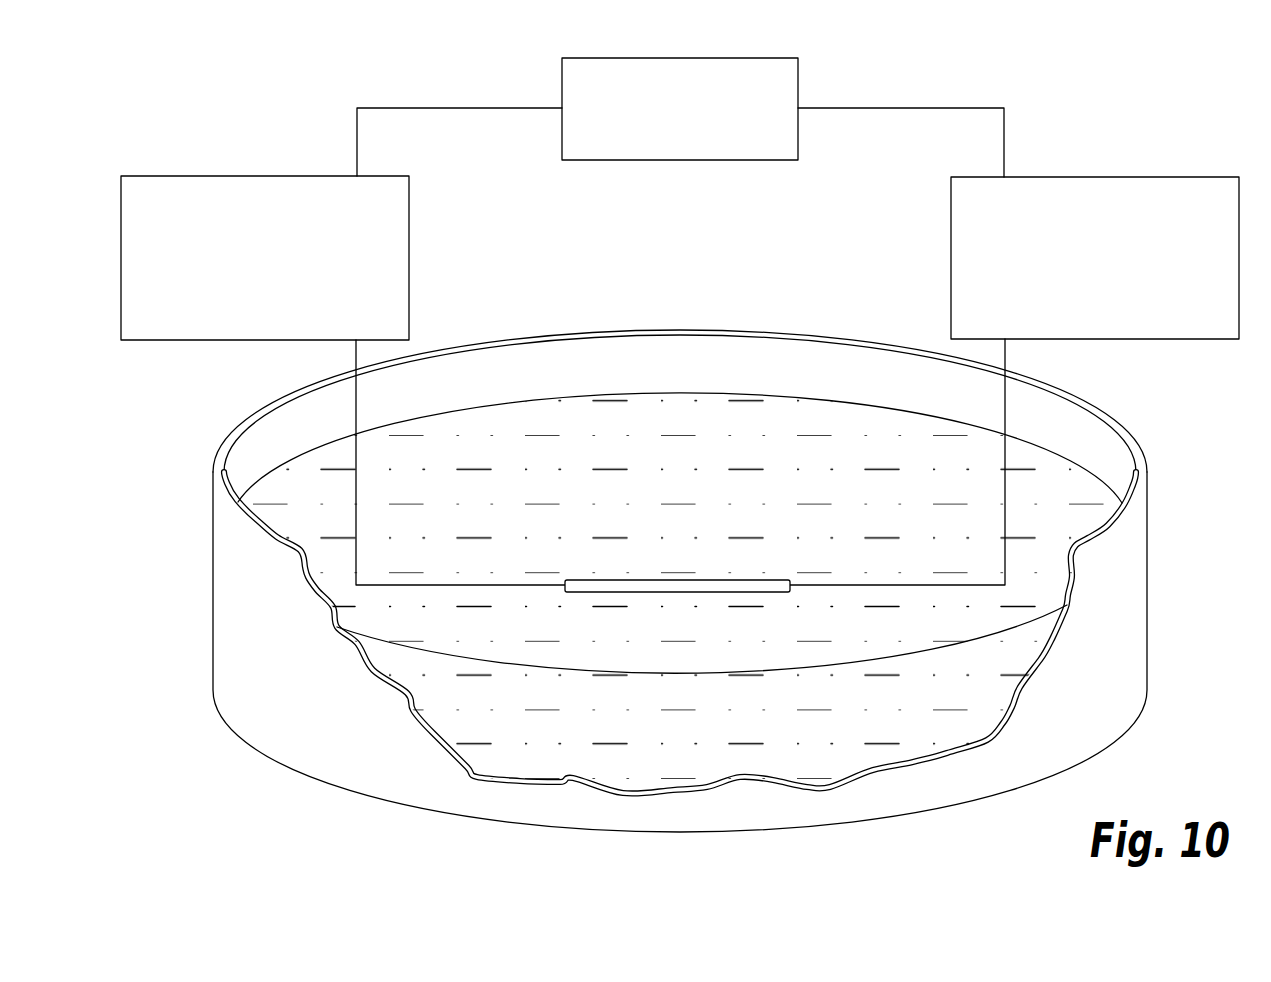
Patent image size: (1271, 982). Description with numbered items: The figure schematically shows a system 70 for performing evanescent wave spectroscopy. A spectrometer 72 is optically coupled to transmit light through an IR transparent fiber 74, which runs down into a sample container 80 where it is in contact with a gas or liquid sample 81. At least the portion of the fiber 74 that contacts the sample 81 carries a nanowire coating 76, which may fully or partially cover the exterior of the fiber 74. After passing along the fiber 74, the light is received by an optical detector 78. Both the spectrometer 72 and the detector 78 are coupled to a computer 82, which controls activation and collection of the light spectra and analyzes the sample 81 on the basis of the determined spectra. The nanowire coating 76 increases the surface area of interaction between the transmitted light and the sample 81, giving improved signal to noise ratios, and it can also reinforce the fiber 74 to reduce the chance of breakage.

The system 70 is at (681, 433).
The spectrometer 72 is at (155, 176).
The IR transparent fiber 74 is at (435, 585).
The nanowire coating 76 is at (632, 580).
The optical detector 78 is at (1083, 177).
The sample container 80 is at (1147, 560).
The sample 81 is at (307, 493).
The computer 82 is at (562, 82).